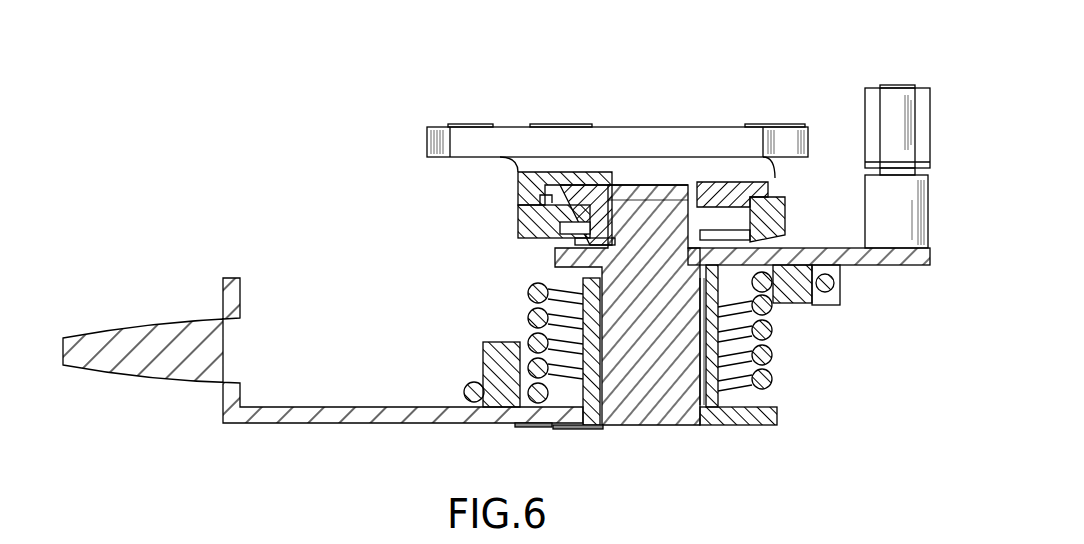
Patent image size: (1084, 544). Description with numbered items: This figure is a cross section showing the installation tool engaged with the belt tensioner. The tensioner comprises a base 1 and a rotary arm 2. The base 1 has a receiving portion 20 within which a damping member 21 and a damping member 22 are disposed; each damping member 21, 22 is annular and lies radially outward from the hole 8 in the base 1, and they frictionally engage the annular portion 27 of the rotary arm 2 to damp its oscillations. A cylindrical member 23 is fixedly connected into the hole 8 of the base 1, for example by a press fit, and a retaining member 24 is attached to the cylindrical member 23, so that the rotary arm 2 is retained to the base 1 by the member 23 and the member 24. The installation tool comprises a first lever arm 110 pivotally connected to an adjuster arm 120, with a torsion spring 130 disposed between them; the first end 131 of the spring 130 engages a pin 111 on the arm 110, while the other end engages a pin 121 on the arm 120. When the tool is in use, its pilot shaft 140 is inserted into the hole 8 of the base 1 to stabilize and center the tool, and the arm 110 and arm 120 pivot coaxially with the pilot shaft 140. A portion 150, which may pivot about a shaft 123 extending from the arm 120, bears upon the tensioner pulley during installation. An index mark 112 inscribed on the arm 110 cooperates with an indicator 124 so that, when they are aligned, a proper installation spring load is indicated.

The base 1 is at (470, 125).
The hole 8 is at (622, 160).
The rotary arm 2 is at (518, 222).
The receiving portion 20 is at (719, 192).
The damping member 21 is at (576, 183).
The damping member 22 is at (577, 232).
The cylindrical member 23 is at (648, 198).
The retaining member 24 is at (612, 247).
The annular portion 27 is at (535, 200).
The first lever arm 110 is at (317, 423).
The pin 111 is at (483, 350).
The index mark 112 is at (532, 428).
The adjuster arm 120 is at (877, 265).
The pin 121 is at (800, 306).
The shaft 123 is at (866, 190).
The indicator 124 is at (578, 429).
The torsion spring 130 is at (770, 357).
The first end 131 is at (463, 396).
The pilot shaft 140 is at (664, 196).
The portion 150 is at (866, 110).